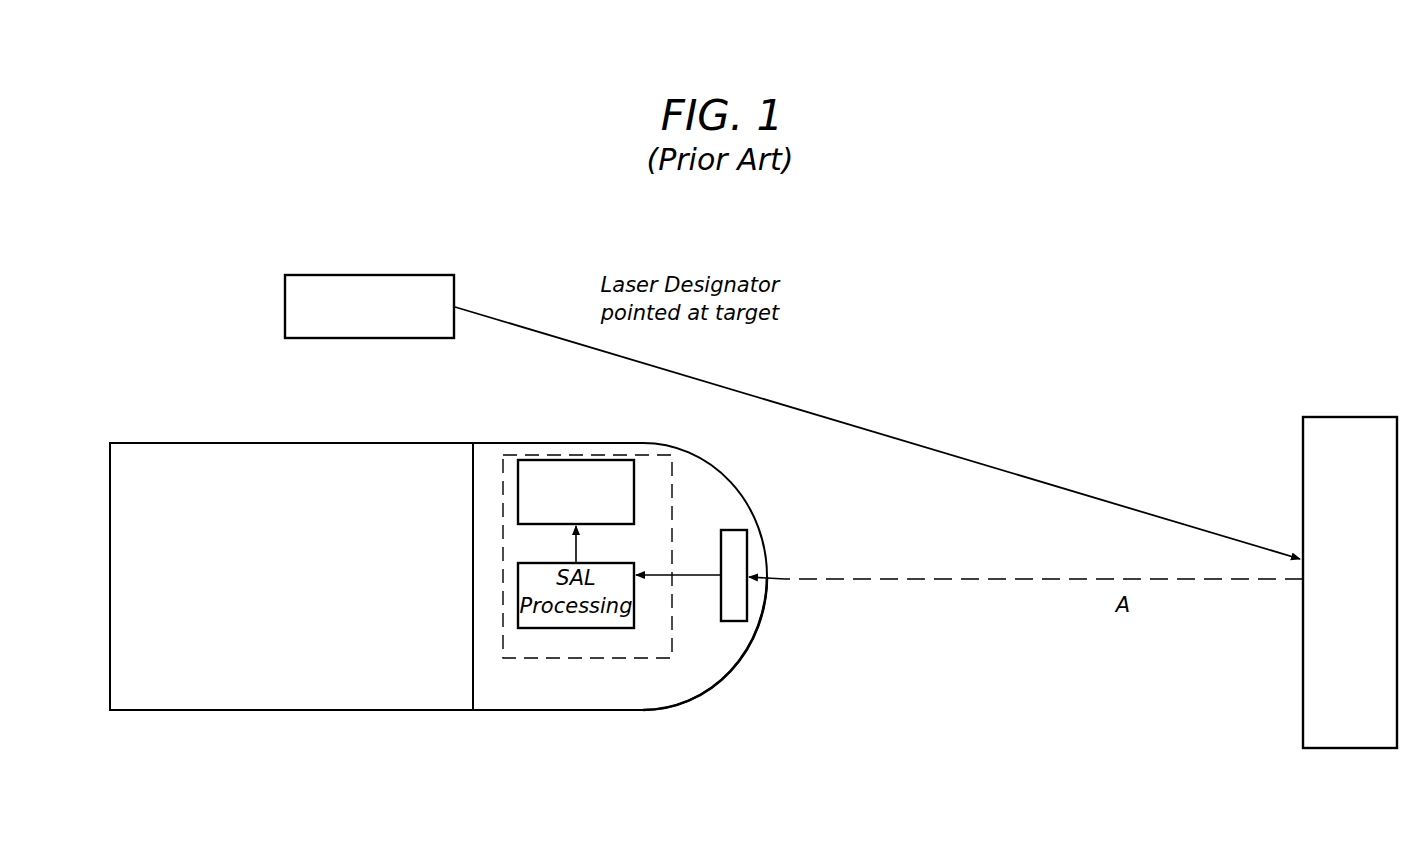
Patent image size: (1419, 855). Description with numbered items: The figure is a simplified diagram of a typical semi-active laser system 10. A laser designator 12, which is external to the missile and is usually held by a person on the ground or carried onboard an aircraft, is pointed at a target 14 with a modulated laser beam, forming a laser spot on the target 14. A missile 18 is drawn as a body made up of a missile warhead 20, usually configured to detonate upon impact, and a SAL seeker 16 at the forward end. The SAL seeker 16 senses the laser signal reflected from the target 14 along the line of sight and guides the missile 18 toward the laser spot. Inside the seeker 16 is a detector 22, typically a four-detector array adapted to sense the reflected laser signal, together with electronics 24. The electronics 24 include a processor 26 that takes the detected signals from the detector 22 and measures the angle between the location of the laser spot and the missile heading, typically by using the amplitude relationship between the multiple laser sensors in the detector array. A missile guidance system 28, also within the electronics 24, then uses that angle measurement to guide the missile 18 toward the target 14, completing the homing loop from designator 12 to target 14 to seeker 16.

The SAL system 10 is at (1140, 318).
The laser designator 12 is at (310, 275).
The target 14 is at (1348, 417).
The SAL seeker 16 is at (535, 700).
The missile 18 is at (147, 443).
The missile warhead 20 is at (180, 700).
The detector 22 is at (735, 530).
The electronics 24 is at (503, 463).
The processor 26 is at (627, 628).
The missile guidance system 28 is at (608, 460).